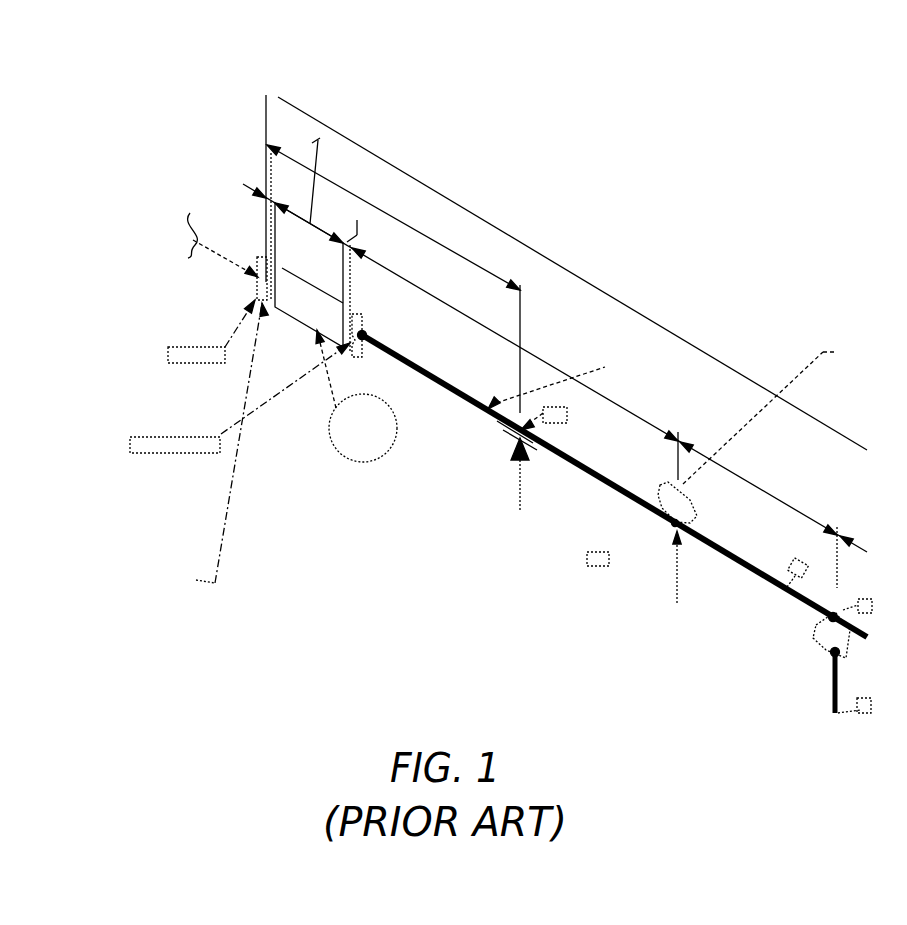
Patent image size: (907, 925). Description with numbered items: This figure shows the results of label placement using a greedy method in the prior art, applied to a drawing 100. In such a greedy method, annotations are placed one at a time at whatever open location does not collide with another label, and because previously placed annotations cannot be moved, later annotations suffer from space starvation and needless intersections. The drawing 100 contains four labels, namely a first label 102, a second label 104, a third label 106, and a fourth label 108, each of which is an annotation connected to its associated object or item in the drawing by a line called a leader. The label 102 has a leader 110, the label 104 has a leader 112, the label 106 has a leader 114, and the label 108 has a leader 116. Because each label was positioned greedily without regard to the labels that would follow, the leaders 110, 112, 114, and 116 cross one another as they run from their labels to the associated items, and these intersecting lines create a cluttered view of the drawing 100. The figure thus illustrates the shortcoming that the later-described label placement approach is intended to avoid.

The drawing 100 is at (680, 78).
The label 102 is at (353, 462).
The label 104 is at (193, 582).
The label 106 is at (160, 437).
The label 108 is at (168, 361).
The leader 110 is at (331, 381).
The leader 112 is at (228, 531).
The leader 114 is at (280, 400).
The leader 116 is at (232, 333).